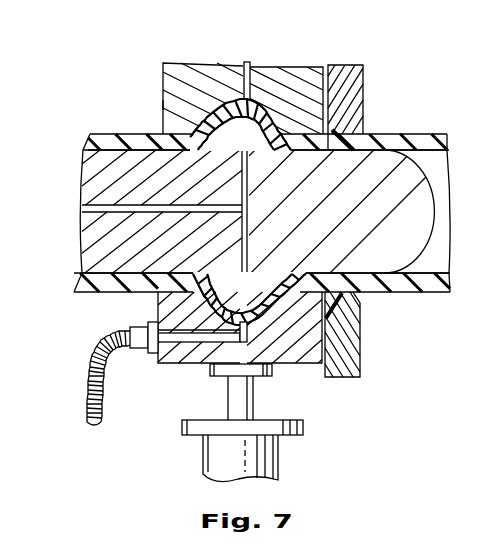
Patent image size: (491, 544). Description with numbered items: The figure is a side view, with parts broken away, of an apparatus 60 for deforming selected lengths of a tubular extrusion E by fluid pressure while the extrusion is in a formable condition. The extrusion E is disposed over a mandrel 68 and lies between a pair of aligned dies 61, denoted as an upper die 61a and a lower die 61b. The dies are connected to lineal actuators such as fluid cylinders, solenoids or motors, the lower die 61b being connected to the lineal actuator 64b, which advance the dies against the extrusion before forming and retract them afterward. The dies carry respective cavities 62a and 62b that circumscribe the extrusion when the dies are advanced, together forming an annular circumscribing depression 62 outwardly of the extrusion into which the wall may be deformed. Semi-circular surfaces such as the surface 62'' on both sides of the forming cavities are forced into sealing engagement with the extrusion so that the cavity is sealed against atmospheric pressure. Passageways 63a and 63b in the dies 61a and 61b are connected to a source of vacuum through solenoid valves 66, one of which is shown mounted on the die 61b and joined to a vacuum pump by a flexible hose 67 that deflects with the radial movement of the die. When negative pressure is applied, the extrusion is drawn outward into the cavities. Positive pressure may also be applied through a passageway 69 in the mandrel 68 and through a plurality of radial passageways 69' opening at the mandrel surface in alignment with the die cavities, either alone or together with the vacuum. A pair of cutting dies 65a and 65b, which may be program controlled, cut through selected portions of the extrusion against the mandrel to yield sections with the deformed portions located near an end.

The apparatus 60 is at (86, 63).
The aligned dies 61 is at (163, 105).
The die 61a is at (163, 70).
The die 61b is at (158, 304).
The annular circumscribing depression 62 is at (208, 176).
The cavity 62a is at (272, 110).
The cavity 62b is at (263, 320).
The semi-circular surface 62'' is at (369, 201).
The passageway 63a is at (251, 66).
The passageway 63b is at (172, 343).
The lineal actuator 64b is at (303, 428).
The cutting die 65a is at (363, 65).
The cutting die 65b is at (355, 322).
The solenoid valve 66 is at (132, 348).
The flexible hose 67 is at (93, 352).
The mandrel 68 is at (88, 166).
The passageway 69 is at (138, 211).
The radial passageways 69' is at (341, 211).
The tubular extrusion E is at (400, 137).